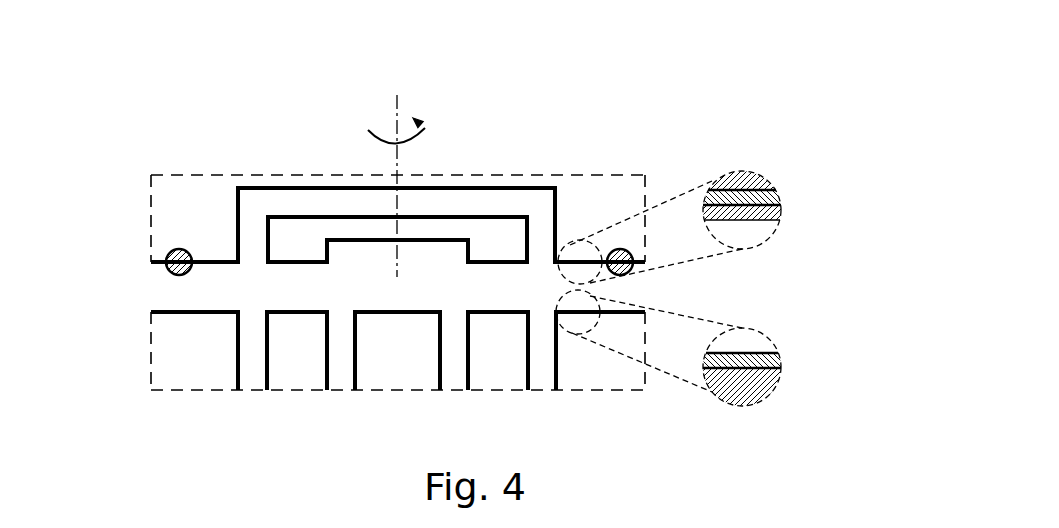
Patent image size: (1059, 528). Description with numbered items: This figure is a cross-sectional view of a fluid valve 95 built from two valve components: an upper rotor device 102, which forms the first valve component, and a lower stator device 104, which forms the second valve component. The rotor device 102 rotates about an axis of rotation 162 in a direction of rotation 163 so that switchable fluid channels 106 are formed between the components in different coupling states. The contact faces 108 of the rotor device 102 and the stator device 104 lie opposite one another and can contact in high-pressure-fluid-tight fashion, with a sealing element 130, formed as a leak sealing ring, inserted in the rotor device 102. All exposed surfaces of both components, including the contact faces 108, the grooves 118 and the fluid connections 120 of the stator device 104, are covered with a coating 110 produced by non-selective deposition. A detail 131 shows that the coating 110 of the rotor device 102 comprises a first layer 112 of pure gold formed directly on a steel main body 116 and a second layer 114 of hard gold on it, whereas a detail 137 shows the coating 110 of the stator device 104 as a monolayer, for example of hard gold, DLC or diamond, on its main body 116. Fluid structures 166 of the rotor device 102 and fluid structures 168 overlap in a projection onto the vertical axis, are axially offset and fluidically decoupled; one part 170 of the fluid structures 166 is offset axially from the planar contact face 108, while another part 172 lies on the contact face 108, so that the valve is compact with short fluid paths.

The fluid valve 95 is at (118, 162).
The rotor device 102 is at (145, 175).
The stator device 104 is at (145, 310).
The fluid channel 106 is at (297, 203).
The contact face 108 is at (297, 268).
The coating 110 is at (249, 222).
The first layer 112 is at (772, 198).
The second layer 114 is at (772, 213).
The main body 116 is at (183, 188).
The groove 118 is at (367, 260).
The fluid connection 120 is at (252, 378).
The sealing element 130 is at (181, 250).
The detail 131 is at (783, 178).
The detail 137 is at (785, 346).
The axis of rotation 162 is at (400, 100).
The direction of rotation 163 is at (390, 137).
The fluid structures 166 is at (569, 222).
The fluid structures 168 is at (236, 337).
The part of the fluid structures 170 is at (338, 253).
The other part of the fluid structures 172 is at (433, 245).